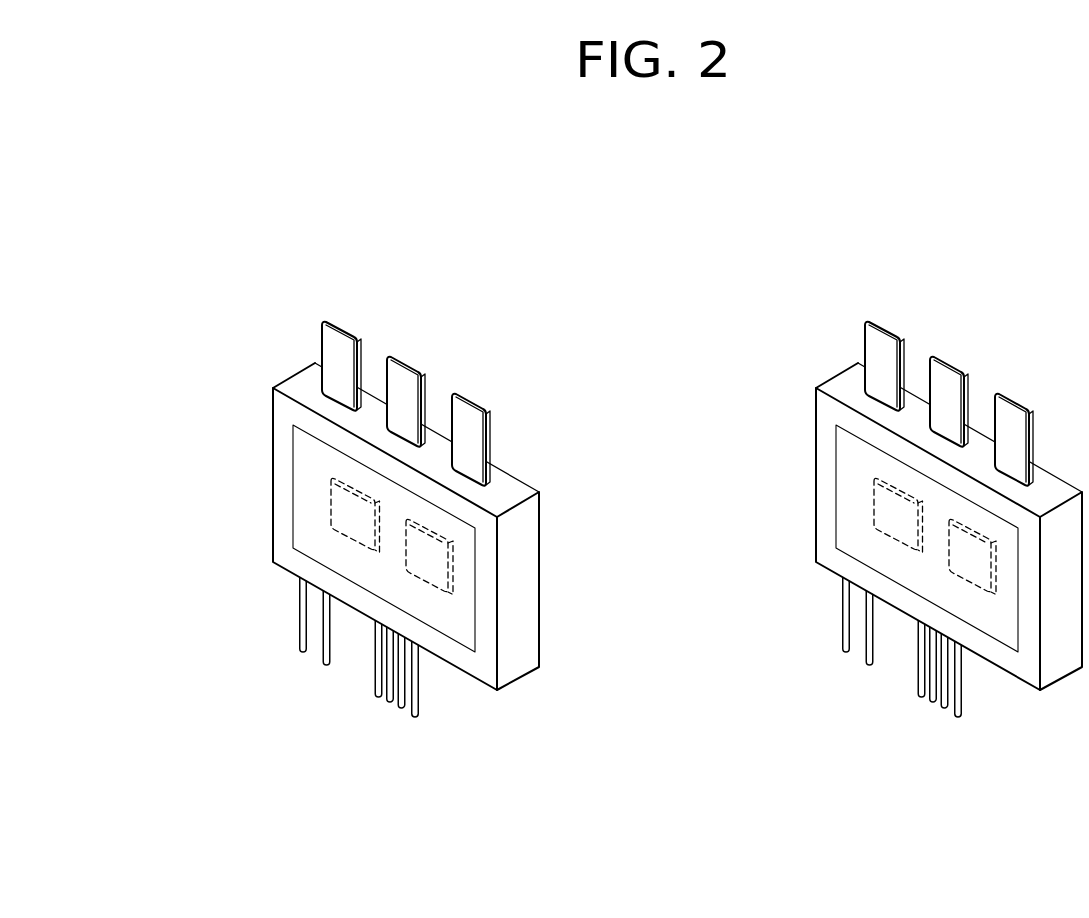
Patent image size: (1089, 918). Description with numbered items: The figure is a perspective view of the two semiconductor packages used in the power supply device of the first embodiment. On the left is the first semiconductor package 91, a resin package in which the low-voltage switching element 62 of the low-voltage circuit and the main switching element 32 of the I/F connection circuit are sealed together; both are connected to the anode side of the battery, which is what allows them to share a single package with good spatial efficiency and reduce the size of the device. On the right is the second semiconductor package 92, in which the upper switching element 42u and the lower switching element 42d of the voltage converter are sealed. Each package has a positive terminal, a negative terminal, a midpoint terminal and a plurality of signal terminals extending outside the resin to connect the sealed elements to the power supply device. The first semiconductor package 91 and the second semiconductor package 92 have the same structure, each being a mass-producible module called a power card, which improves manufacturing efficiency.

The first semiconductor package 91 is at (274, 282).
The second semiconductor package 92 is at (897, 488).
The low-voltage switching element 62 is at (352, 515).
The main switching element 32 is at (428, 555).
The upper switching element 42u is at (817, 505).
The lower switching element 42d is at (985, 641).